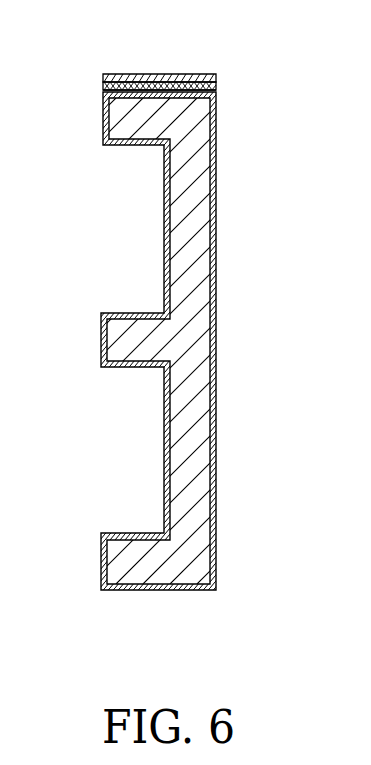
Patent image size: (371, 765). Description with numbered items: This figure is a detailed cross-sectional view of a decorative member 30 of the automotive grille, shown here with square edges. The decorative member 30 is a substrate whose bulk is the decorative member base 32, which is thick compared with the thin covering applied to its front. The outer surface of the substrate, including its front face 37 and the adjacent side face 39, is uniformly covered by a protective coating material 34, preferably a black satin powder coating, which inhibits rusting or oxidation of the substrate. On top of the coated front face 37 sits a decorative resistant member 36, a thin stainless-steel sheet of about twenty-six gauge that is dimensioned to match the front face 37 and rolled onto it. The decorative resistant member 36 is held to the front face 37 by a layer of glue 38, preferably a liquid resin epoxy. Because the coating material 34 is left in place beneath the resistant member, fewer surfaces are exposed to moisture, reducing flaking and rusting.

The decorative member 30 is at (268, 108).
The decorative member base 32 is at (141, 345).
The protective coating material 34 is at (217, 199).
The decorative resistant member 36 is at (150, 80).
The front face 37 is at (178, 89).
The glue 38 is at (103, 92).
The side face 39 is at (103, 127).